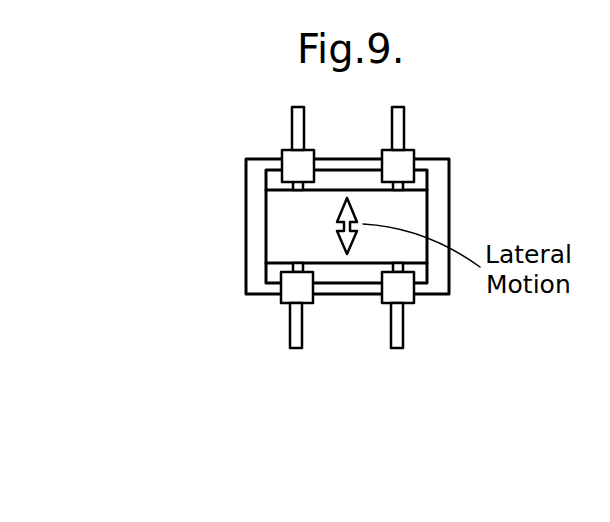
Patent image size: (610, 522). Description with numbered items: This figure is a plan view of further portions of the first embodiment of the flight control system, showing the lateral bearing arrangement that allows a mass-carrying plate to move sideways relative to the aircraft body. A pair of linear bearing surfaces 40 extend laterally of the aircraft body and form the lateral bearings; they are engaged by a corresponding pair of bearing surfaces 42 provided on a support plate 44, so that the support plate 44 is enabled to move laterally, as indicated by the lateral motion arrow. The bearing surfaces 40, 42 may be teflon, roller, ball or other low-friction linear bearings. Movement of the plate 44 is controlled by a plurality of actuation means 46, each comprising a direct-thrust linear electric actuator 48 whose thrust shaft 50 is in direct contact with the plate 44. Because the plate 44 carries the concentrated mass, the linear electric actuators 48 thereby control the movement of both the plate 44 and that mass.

The linear bearing surfaces 40 is at (442, 192).
The bearing surfaces 42 is at (428, 217).
The support plate 44 is at (290, 240).
The actuation means 46 is at (368, 246).
The linear electric actuator 48 is at (285, 303).
The thrust shaft 50 is at (292, 337).